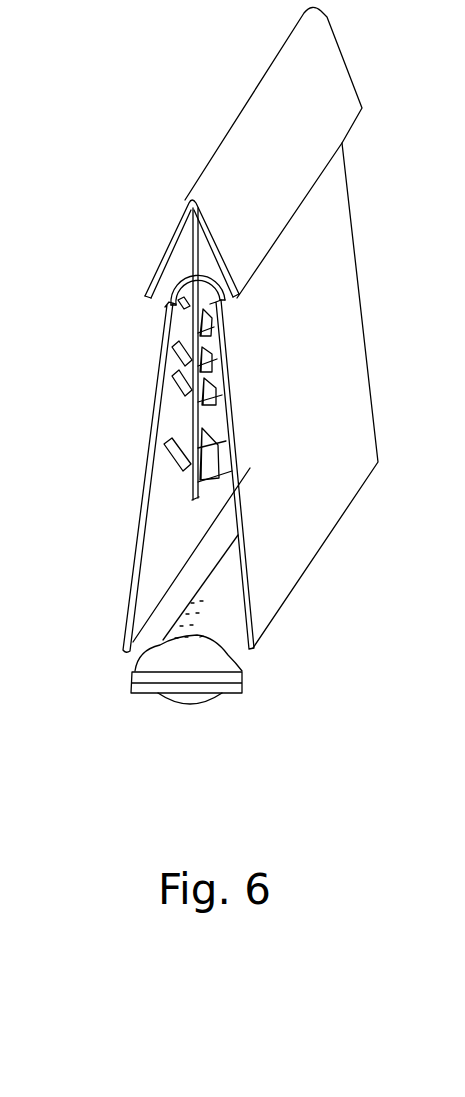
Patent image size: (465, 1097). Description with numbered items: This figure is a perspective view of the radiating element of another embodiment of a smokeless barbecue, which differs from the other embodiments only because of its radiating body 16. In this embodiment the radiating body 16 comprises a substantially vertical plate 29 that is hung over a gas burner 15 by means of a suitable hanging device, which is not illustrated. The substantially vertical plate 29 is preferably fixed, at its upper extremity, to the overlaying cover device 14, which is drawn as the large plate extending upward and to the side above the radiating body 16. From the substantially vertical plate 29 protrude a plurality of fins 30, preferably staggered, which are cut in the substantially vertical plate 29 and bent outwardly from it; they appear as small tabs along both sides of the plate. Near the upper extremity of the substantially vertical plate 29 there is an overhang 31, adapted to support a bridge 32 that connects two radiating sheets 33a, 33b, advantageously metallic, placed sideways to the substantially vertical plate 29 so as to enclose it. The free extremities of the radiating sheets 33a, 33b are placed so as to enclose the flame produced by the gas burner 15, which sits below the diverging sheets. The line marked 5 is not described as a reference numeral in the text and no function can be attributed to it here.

The blade edge 5 is at (380, 367).
The cover device 14 is at (237, 160).
The gas burner 15 is at (252, 664).
The radiating body 16 is at (126, 309).
The substantially vertical plate 29 is at (200, 490).
The fins 30 is at (217, 327).
The overhang 31 is at (187, 272).
The bridge 32 is at (188, 277).
The radiating sheet 33a is at (260, 567).
The radiating sheet 33b is at (127, 590).